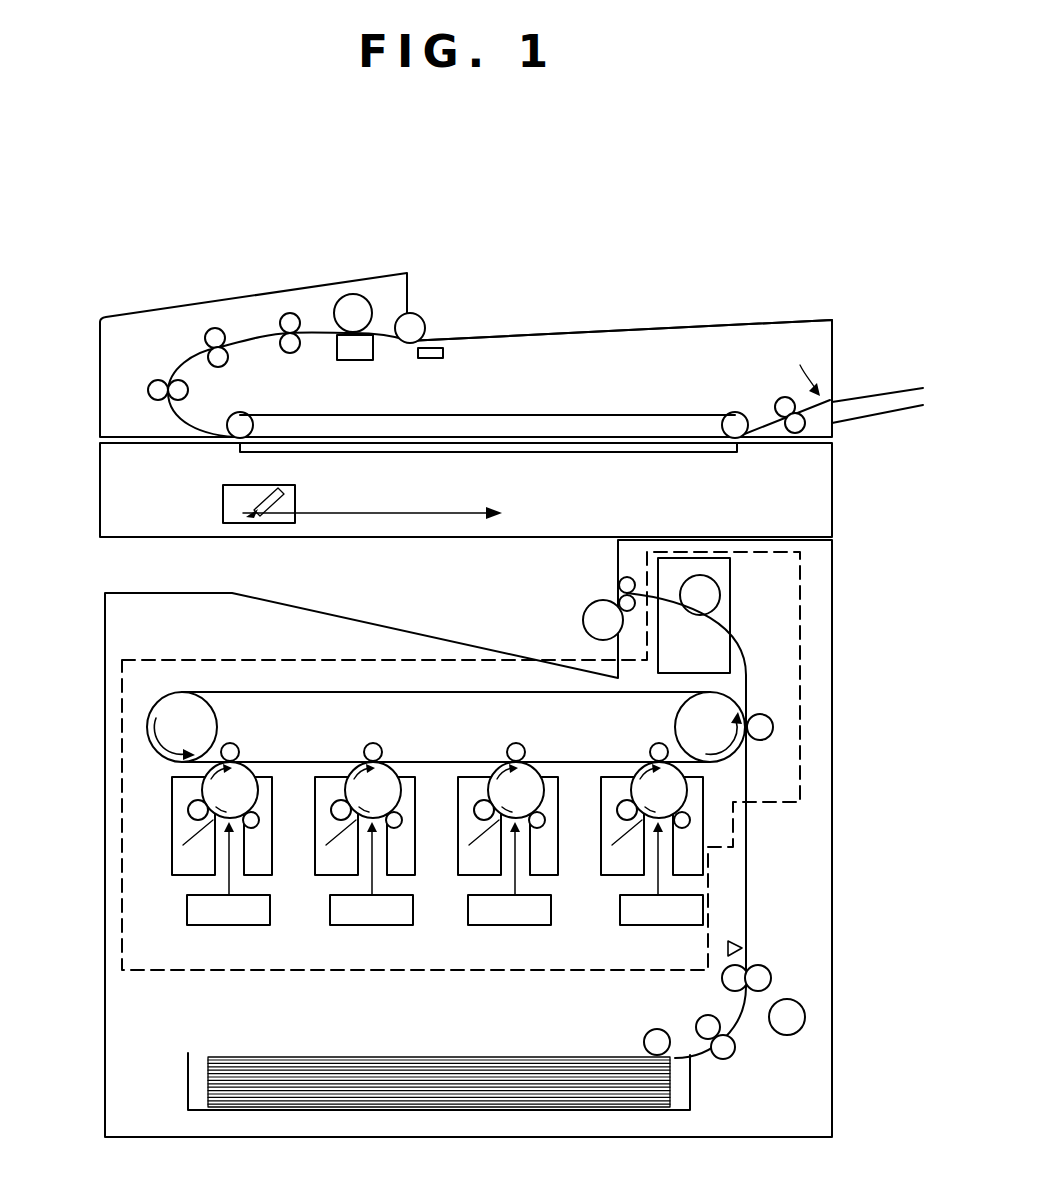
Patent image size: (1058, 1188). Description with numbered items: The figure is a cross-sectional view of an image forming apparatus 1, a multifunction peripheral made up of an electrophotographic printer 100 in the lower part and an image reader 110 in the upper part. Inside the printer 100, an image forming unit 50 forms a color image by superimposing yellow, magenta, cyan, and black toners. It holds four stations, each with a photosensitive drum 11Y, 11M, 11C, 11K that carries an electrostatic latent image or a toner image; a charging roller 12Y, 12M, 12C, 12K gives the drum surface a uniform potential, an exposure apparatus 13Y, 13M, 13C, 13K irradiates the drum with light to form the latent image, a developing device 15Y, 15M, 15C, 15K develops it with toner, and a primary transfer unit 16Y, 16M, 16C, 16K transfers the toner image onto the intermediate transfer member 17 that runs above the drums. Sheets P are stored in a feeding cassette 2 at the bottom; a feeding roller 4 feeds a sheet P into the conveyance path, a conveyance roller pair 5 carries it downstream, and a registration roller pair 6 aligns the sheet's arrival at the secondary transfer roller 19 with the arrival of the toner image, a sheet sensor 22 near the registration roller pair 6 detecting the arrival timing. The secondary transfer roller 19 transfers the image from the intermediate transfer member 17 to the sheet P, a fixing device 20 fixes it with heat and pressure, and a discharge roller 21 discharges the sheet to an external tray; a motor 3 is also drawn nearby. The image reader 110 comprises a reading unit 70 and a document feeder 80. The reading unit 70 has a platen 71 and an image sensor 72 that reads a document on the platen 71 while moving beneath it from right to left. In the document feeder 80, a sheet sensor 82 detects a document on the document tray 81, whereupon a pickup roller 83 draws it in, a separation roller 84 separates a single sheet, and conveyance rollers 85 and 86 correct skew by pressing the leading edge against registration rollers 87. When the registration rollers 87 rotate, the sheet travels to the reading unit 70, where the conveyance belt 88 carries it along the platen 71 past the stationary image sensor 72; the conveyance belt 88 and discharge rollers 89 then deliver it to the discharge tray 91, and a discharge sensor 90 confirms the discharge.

The image forming apparatus 1 is at (493, 257).
The feeding cassette 2 is at (692, 1090).
The motor 3 is at (790, 998).
The feeding roller 4 is at (644, 1035).
The conveyance roller pair 5 is at (735, 1054).
The registration roller pair 6 is at (724, 988).
The photosensitive drum 11Y is at (245, 773).
The photosensitive drum 11M is at (389, 772).
The photosensitive drum 11C is at (528, 770).
The photosensitive drum 11K is at (643, 770).
The charging roller 12Y is at (252, 829).
The charging roller 12M is at (395, 829).
The charging roller 12C is at (539, 829).
The charging roller 12K is at (688, 823).
The exposure apparatus 13Y is at (185, 910).
The exposure apparatus 13M is at (328, 910).
The exposure apparatus 13C is at (466, 910).
The exposure apparatus 13K is at (618, 910).
The developing device 15Y is at (189, 812).
The developing device 15M is at (332, 812).
The developing device 15C is at (475, 812).
The developing device 15K is at (619, 813).
The primary transfer unit 16Y is at (236, 745).
The primary transfer unit 16M is at (366, 746).
The primary transfer unit 16C is at (510, 746).
The primary transfer unit 16K is at (656, 746).
The intermediate transfer member 17 is at (265, 693).
The secondary transfer roller 19 is at (766, 741).
The fixing device 20 is at (734, 606).
The discharge roller 21 is at (618, 585).
The sheet sensor 22 is at (744, 948).
The image forming unit 50 is at (802, 624).
The reading unit 70 is at (835, 515).
The platen 71 is at (525, 455).
The image sensor 72 is at (222, 500).
The document feeder 80 is at (836, 326).
The document tray 81 is at (688, 326).
The sheet sensor 82 is at (443, 348).
The pickup roller 83 is at (420, 316).
The separation roller 84 is at (357, 294).
The conveyance roller 85 is at (283, 352).
The conveyance roller 86 is at (205, 339).
The registration rollers 87 is at (156, 380).
The conveyance belt 88 is at (440, 413).
The discharge rollers 89 is at (783, 397).
The discharge sensor 90 is at (803, 368).
The discharge tray 91 is at (896, 390).
The electrophotographic printer 100 is at (90, 1137).
The image reader 110 is at (90, 283).
The sheet P is at (410, 1057).